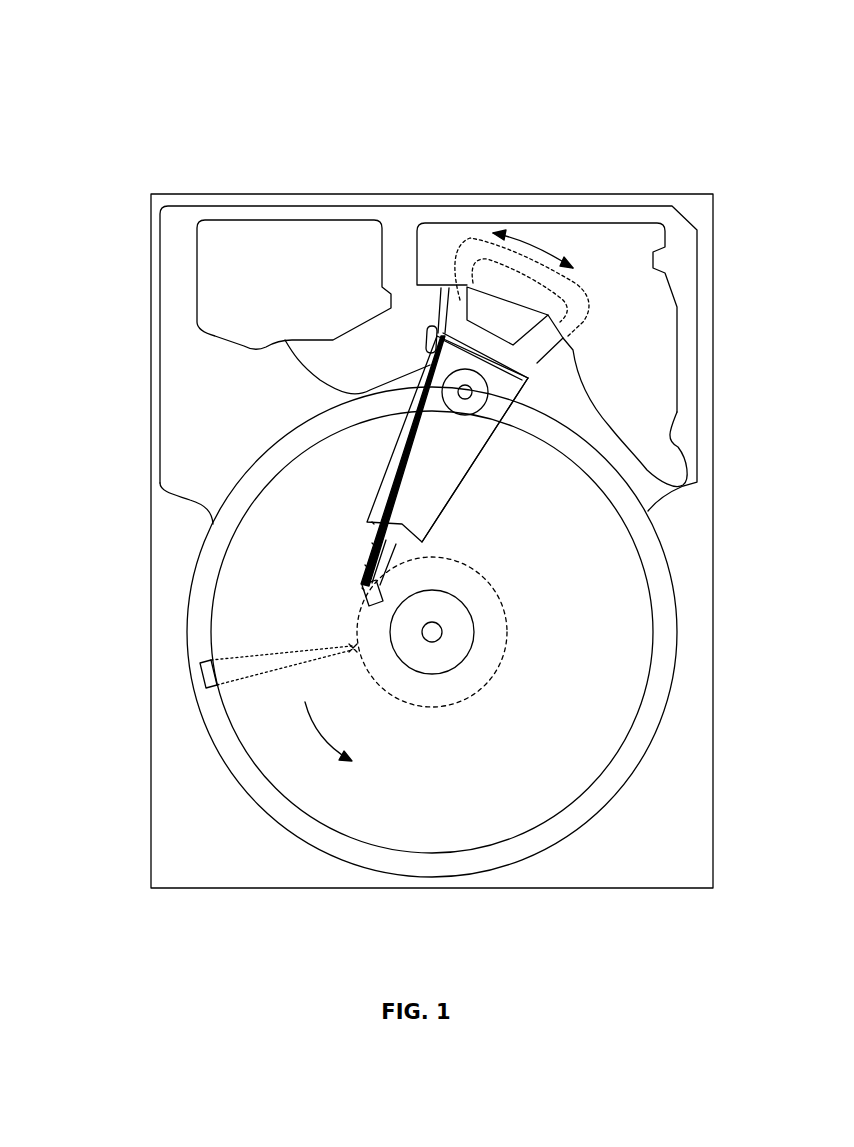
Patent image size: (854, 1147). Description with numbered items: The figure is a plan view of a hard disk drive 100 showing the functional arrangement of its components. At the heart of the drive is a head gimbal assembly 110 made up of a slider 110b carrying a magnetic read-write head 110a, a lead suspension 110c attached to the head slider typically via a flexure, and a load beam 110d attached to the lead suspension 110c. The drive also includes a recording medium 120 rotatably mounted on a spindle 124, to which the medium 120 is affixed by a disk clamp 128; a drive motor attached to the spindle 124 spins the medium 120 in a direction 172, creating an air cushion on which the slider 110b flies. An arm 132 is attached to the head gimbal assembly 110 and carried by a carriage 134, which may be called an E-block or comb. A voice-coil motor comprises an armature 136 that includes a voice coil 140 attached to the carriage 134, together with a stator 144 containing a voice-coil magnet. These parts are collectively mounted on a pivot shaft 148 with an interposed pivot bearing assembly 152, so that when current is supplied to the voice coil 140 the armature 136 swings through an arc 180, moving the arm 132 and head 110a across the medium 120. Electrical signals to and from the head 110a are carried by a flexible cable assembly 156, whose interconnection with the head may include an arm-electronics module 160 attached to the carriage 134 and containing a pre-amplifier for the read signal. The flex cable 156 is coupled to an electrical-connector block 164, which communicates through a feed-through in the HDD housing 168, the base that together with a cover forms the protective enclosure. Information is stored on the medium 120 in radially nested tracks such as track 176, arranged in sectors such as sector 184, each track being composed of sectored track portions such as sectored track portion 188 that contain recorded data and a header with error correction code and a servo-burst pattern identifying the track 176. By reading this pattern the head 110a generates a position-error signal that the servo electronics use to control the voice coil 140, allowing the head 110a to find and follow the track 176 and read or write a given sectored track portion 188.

The hard disk drive 100 is at (84, 88).
The head gimbal assembly 110 is at (82, 468).
The magnetic read-write head 110a is at (362, 588).
The slider 110b is at (365, 565).
The lead suspension 110c is at (372, 543).
The load beam 110d is at (372, 522).
The recording medium 120 is at (590, 590).
The spindle 124 is at (445, 632).
The disk clamp 128 is at (453, 648).
The arm 132 is at (425, 492).
The carriage 134 is at (482, 422).
The armature 136 is at (430, 282).
The voice coil 140 is at (460, 292).
The stator 144 is at (650, 305).
The pivot shaft 148 is at (472, 392).
The pivot bearing assembly 152 is at (487, 412).
The flexible cable assembly 156 is at (305, 372).
The arm-electronics module 160 is at (424, 360).
The electrical-connector block 164 is at (215, 282).
The HDD housing 168 is at (700, 206).
The direction 172 is at (345, 738).
The track 176 is at (498, 598).
The arc 180 is at (530, 262).
The sector 184 is at (200, 672).
The sectored track portion 188 is at (352, 646).